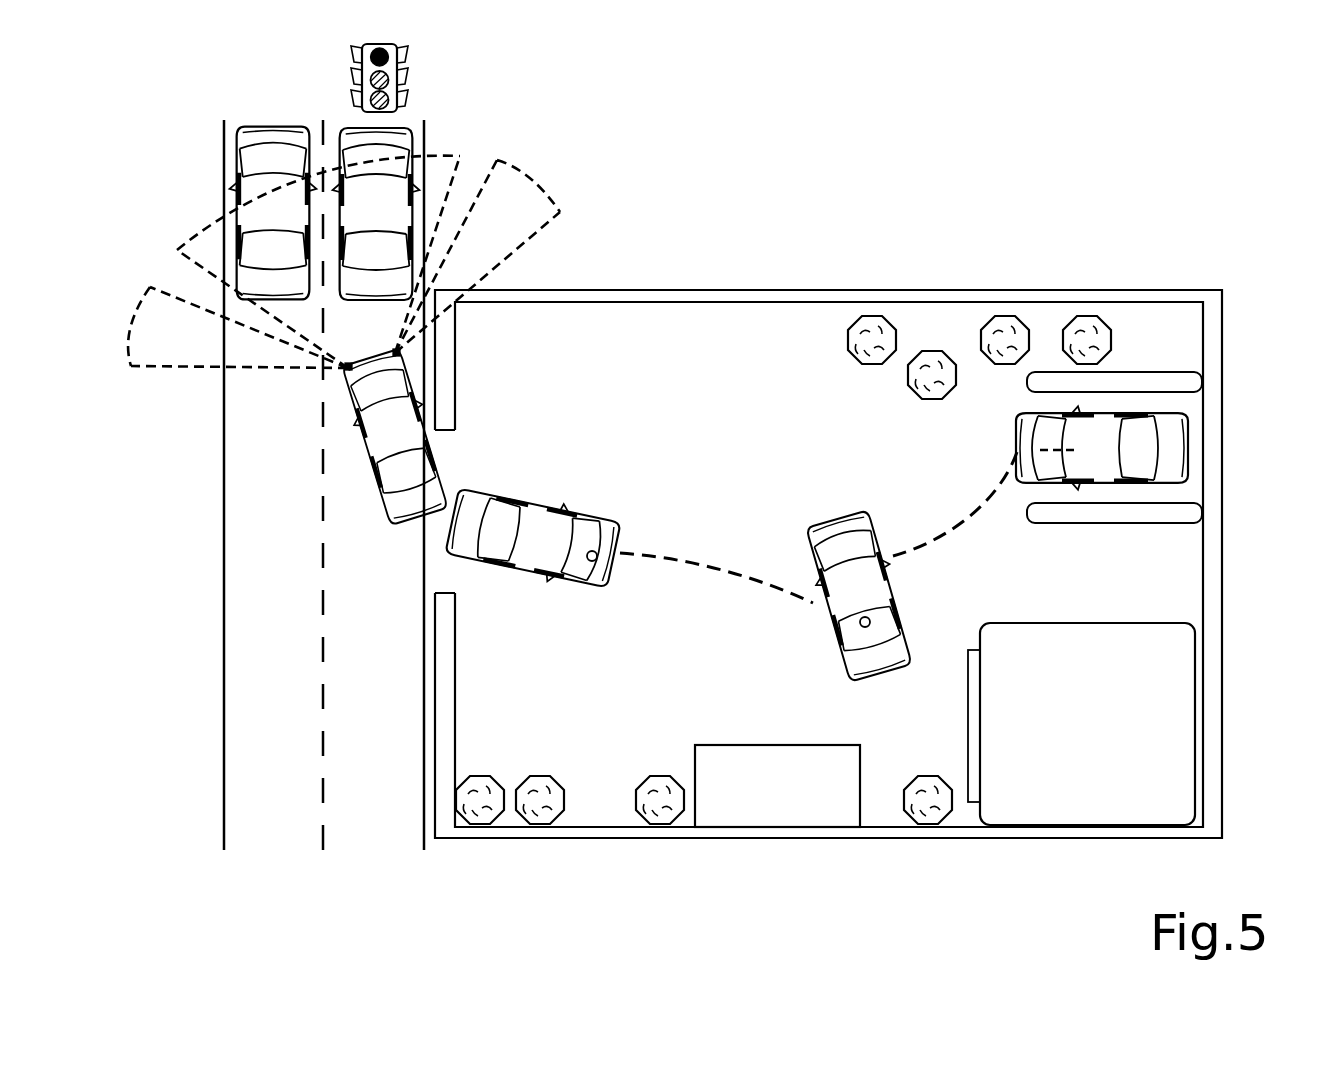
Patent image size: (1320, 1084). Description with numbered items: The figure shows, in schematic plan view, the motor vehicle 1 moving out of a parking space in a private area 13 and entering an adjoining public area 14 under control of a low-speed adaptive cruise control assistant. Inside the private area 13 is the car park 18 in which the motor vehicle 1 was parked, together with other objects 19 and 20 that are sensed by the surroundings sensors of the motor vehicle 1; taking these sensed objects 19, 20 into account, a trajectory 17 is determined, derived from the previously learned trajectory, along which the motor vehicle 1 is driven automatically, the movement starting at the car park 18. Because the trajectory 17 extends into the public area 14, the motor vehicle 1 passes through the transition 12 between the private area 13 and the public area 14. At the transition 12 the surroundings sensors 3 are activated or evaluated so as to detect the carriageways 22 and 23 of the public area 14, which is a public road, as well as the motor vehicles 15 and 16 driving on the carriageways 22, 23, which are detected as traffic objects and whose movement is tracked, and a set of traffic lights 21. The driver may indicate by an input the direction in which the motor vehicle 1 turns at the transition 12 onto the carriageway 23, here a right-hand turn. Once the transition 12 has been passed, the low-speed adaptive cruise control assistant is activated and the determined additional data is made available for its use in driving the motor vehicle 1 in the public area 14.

The motor vehicle 1 is at (390, 452).
The surroundings sensors 3 is at (350, 370).
The transition 12 is at (460, 446).
The private area 13 is at (680, 397).
The public area 14 is at (288, 521).
The motor vehicle 15 is at (270, 150).
The motor vehicle 16 is at (371, 275).
The trajectory 17 is at (705, 575).
The car park 18 is at (1190, 406).
The objects 19 is at (1080, 325).
The objects 20 is at (778, 805).
The set of traffic lights 21 is at (402, 116).
The carriageway 22 is at (275, 803).
The carriageway 23 is at (365, 803).